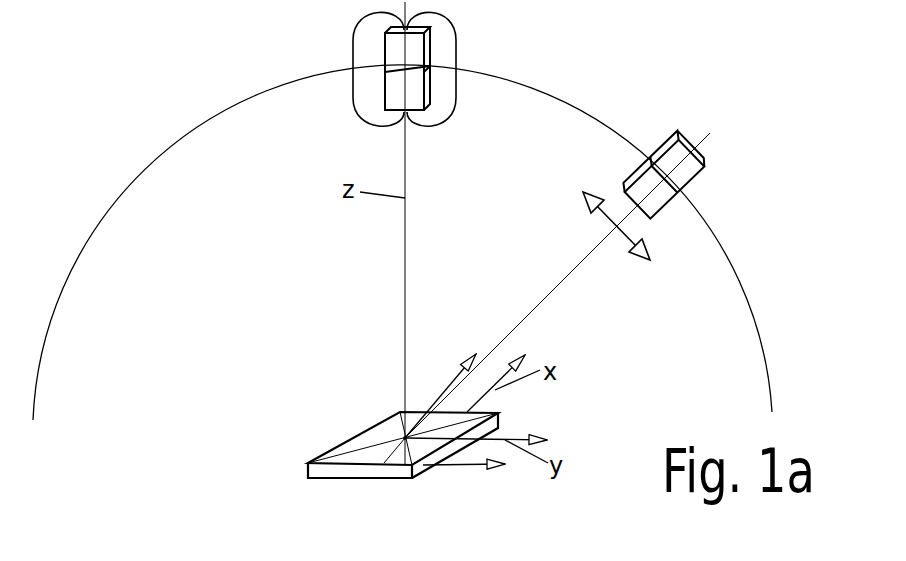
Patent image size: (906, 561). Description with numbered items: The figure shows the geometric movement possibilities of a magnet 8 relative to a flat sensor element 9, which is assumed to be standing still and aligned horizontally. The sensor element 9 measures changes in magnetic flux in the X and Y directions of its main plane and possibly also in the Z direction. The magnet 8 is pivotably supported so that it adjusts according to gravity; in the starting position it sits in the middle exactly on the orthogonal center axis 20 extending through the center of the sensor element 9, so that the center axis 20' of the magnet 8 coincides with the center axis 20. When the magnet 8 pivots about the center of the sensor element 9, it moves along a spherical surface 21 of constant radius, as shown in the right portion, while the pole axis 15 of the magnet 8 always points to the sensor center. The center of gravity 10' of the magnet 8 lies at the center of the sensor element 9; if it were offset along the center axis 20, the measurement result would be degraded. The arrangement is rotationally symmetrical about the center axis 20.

The spherical surface 21 is at (537, 95).
The magnet 8 is at (417, 90).
The center axis 20 is at (457, 233).
The center axis of the magnet 20' is at (557, 233).
The pole axis 15 is at (552, 288).
The sensor element 9 is at (387, 433).
The center of gravity 10' is at (316, 428).